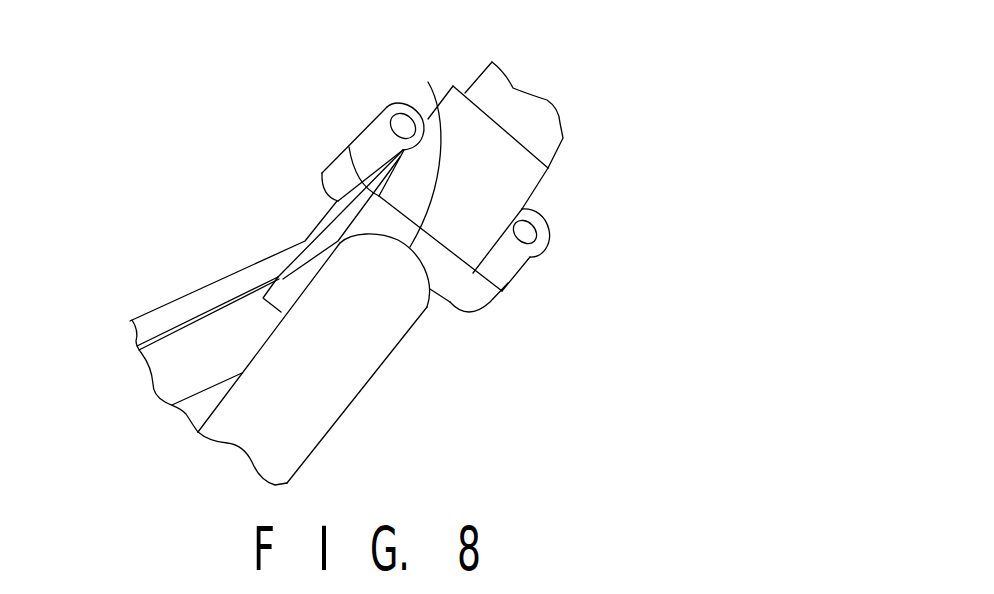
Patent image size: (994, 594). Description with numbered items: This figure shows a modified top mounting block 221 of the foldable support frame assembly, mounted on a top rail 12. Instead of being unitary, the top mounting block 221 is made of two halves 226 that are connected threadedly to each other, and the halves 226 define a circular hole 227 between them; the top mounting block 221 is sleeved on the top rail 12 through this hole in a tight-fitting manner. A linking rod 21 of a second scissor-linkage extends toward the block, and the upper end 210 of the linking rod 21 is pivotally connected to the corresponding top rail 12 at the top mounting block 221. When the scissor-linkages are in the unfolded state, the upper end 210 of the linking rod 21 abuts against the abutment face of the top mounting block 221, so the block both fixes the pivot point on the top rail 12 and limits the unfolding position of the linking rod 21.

The top rail 12 is at (260, 413).
The linking rod 21 is at (152, 307).
The upper end 210 is at (223, 283).
The top mounting block 221 is at (493, 157).
The halves 226 is at (517, 270).
The circular hole 227 is at (425, 146).